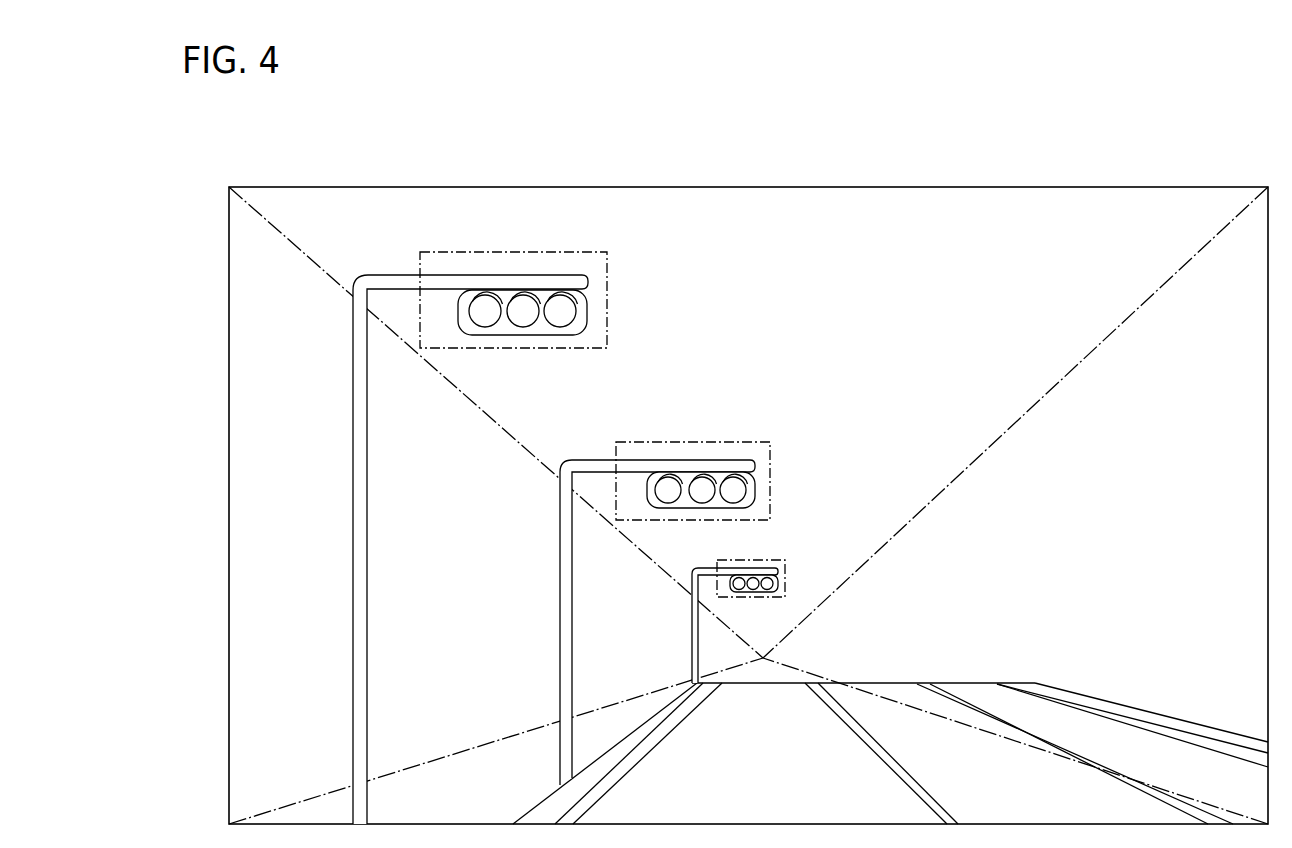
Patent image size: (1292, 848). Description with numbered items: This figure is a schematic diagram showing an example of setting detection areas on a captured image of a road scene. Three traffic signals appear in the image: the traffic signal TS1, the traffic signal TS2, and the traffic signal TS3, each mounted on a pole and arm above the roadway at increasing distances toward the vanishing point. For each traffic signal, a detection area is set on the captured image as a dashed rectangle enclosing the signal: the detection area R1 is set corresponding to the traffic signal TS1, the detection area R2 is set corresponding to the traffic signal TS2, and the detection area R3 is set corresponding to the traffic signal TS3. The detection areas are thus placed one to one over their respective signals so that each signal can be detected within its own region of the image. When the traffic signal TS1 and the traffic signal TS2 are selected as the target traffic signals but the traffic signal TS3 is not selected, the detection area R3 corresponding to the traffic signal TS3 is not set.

The detection area R1 is at (561, 251).
The detection area R2 is at (738, 441).
The detection area R3 is at (757, 558).
The traffic signal TS1 is at (588, 306).
The traffic signal TS2 is at (756, 489).
The traffic signal TS3 is at (779, 584).